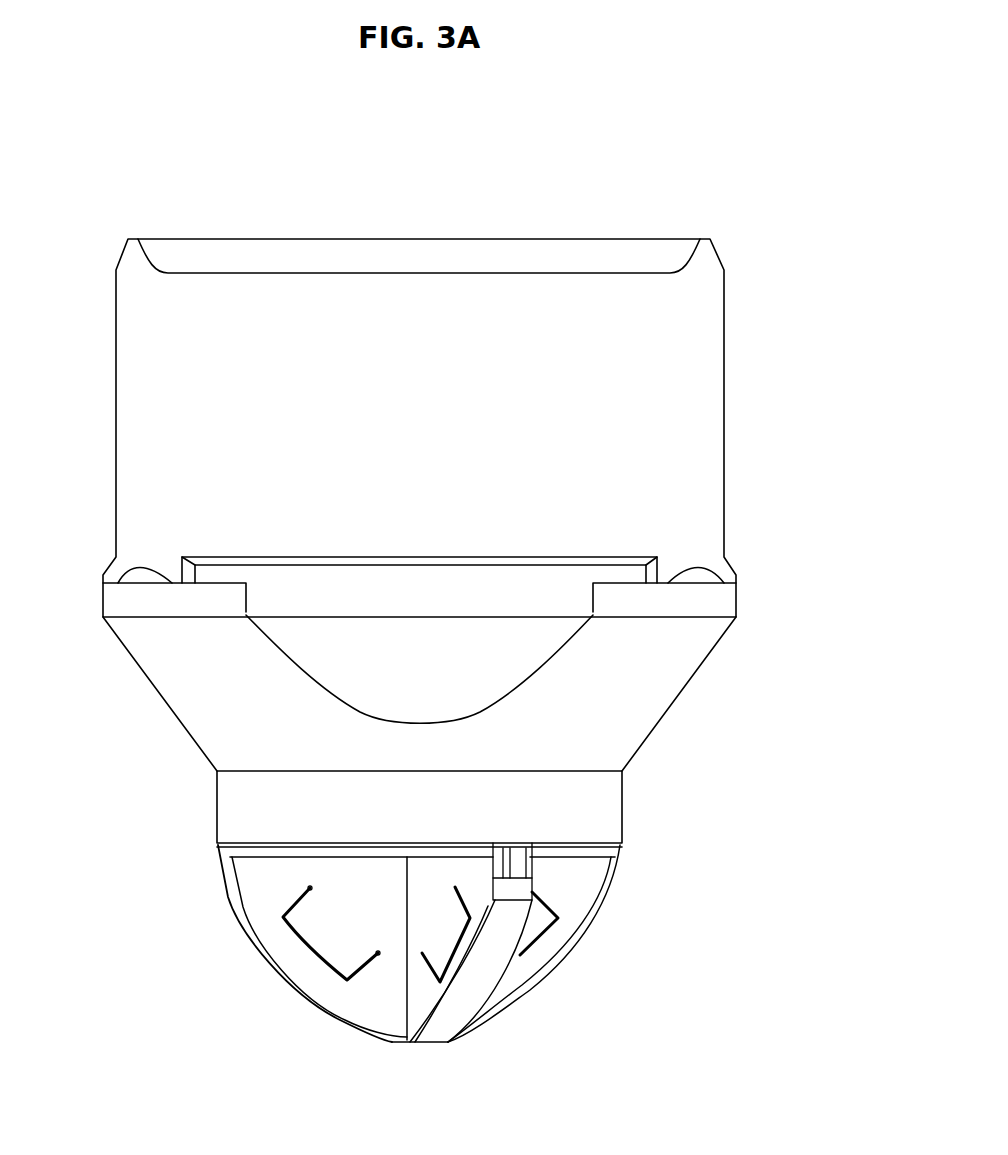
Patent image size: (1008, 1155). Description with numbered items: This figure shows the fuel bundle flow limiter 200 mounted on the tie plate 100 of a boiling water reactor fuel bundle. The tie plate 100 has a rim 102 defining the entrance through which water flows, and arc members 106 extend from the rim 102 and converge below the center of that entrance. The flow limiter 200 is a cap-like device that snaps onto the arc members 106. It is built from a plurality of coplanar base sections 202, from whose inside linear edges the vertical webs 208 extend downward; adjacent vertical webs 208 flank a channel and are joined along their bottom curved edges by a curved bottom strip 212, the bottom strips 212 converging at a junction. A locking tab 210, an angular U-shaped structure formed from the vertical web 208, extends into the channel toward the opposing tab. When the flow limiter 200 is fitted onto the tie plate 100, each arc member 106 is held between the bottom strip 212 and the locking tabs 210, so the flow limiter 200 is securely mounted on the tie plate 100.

The tie plate 100 is at (755, 452).
The rim 102 is at (609, 805).
The arc member 106 is at (515, 861).
The fuel bundle flow limiter 200 is at (640, 935).
The base section 202 is at (218, 843).
The vertical web 208 is at (515, 973).
The locking tab 210 is at (310, 955).
The bottom strip 212 is at (458, 1010).